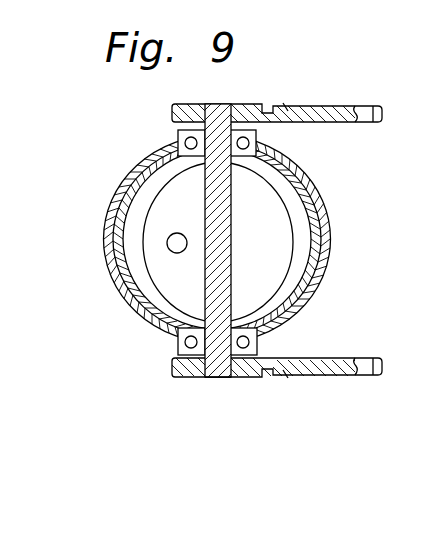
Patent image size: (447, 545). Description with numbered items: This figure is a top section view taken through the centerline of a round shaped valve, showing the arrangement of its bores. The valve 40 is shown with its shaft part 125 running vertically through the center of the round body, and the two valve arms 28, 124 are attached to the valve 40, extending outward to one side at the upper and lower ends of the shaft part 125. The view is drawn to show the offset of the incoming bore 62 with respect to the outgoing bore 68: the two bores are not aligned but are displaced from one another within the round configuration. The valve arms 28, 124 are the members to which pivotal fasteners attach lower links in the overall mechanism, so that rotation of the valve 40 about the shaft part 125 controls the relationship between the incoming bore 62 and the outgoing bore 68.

The valve arm 28 is at (247, 377).
The valve 40 is at (218, 377).
The incoming bore 62 is at (150, 185).
The outgoing bore 68 is at (322, 281).
The valve arm 124 is at (250, 105).
The shaft part 125 is at (231, 247).